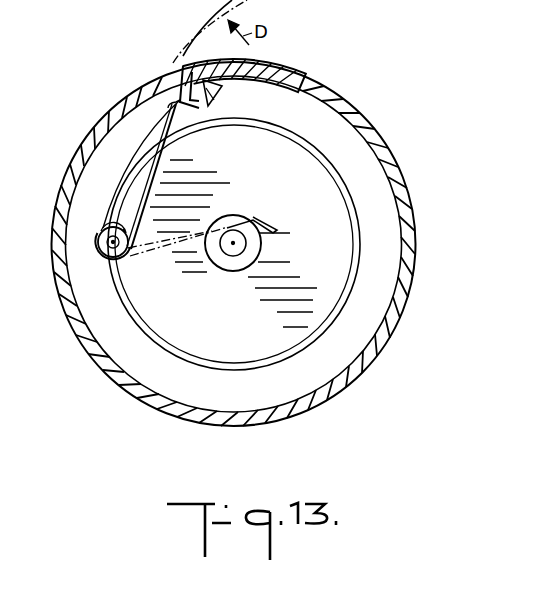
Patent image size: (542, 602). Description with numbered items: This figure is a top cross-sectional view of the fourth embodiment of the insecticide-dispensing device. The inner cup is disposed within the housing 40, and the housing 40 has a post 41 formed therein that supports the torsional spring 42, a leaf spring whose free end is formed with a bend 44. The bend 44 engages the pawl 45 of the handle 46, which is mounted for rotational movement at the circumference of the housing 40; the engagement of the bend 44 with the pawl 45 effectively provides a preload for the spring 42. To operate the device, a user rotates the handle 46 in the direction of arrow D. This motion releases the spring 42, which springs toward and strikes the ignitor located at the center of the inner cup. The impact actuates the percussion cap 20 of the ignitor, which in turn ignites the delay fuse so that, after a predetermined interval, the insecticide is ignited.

The percussion cap 20 is at (246, 247).
The housing 40 is at (93, 360).
The post 41 is at (107, 243).
The torsional spring 42 is at (153, 176).
The bend 44 is at (176, 82).
The pawl 45 is at (196, 110).
The handle 46 is at (276, 63).